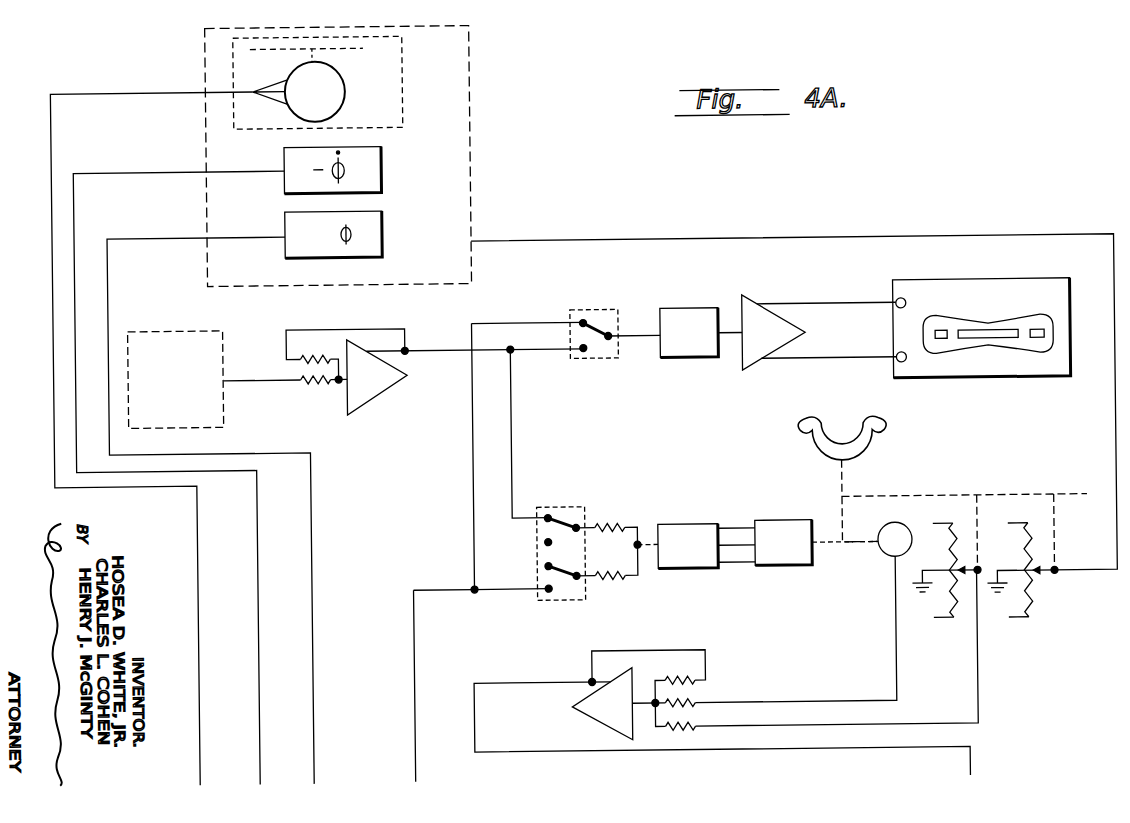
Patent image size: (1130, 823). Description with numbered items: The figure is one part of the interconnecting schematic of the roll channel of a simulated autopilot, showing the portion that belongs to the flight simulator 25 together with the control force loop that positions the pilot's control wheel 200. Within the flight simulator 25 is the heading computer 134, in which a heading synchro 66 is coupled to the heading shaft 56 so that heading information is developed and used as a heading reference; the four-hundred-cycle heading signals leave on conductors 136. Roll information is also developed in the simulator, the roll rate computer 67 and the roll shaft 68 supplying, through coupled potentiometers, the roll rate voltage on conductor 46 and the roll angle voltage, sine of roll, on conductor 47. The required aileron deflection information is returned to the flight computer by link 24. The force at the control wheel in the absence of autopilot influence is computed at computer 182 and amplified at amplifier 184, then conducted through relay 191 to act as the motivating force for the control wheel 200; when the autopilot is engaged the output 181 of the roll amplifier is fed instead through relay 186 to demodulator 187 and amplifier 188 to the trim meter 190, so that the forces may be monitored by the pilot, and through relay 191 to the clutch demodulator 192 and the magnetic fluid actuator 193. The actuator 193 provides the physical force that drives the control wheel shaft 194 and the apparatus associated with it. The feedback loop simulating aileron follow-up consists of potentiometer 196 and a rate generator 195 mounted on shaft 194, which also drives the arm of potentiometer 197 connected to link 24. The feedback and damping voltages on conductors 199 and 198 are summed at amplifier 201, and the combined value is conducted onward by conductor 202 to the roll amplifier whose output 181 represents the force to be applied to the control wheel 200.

The conductors 136 is at (130, 88).
The conductor 46 is at (143, 167).
The conductor 47 is at (136, 233).
The heading shaft 56 is at (366, 46).
The heading synchro 66 is at (348, 98).
The roll rate computer 67 is at (384, 168).
The roll shaft 68 is at (384, 234).
The heading computer 134 is at (406, 86).
The flight simulator 25 is at (473, 162).
The link 24 is at (833, 240).
The computer 182 is at (188, 384).
The amplifier 184 is at (396, 383).
The relay 186 is at (598, 308).
The demodulator 187 is at (684, 310).
The amplifier 188 is at (758, 319).
The trim meter 190 is at (961, 284).
The relay 191 is at (564, 507).
The clutch demodulator 192 is at (696, 545).
The magnetic fluid actuator 193 is at (817, 542).
The control wheel shaft 194 is at (938, 500).
The rate generator 195 is at (878, 558).
The potentiometer 196 is at (943, 594).
The potentiometer 197 is at (1028, 606).
The conductor 198 is at (893, 668).
The conductor 199 is at (974, 716).
The control wheel 200 is at (823, 420).
The amplifier 201 is at (602, 715).
The conductor 202 is at (966, 762).
The output 181 is at (410, 763).